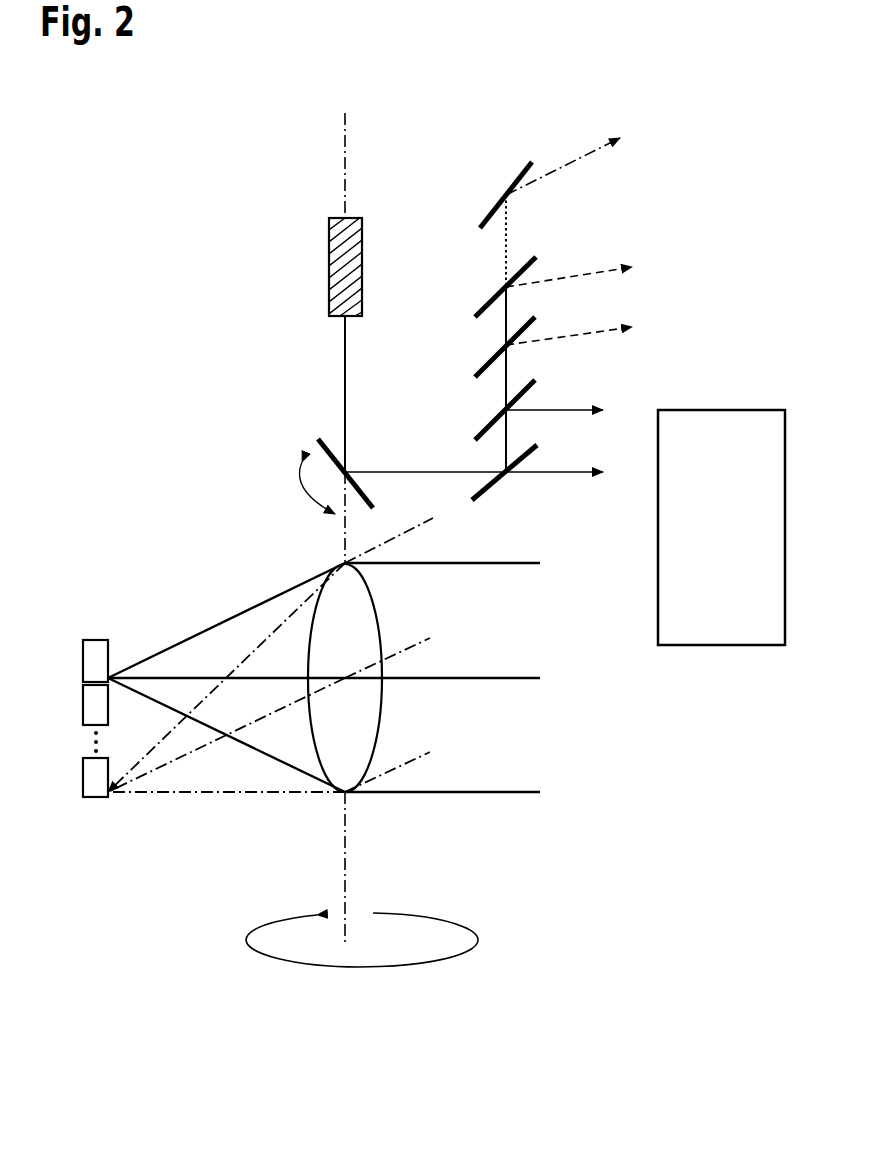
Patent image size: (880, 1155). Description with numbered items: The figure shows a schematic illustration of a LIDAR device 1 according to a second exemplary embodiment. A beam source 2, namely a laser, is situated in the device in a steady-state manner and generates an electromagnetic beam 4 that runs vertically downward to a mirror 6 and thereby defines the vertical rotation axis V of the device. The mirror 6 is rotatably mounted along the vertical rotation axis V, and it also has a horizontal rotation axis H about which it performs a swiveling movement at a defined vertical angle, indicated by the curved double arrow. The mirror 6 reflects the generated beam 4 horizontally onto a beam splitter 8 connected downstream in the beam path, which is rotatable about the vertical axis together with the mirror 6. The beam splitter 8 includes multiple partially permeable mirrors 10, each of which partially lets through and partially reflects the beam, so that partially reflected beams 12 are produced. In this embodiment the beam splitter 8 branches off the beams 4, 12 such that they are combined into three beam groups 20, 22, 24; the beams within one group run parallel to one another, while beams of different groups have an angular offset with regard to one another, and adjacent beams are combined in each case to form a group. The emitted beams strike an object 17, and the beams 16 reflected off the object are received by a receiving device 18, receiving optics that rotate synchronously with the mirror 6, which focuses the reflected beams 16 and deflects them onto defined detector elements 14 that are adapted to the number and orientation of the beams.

The LIDAR device 1 is at (165, 210).
The beam source 2 is at (329, 244).
The electromagnetic beam 4 is at (345, 361).
The mirror 6 is at (318, 447).
The beam splitter 8 is at (503, 170).
The partially permeable mirror 10 is at (490, 215).
The partially reflected beam 12 is at (529, 340).
The detector element 14 is at (97, 818).
The reflected beam 16 is at (540, 563).
The object 17 is at (720, 646).
The receiving device 18 is at (382, 712).
The beam group 20 is at (560, 410).
The beam group 22 is at (583, 268).
The beam group 24 is at (583, 158).
The vertical rotation axis V is at (345, 152).
The horizontal rotation axis H is at (298, 503).